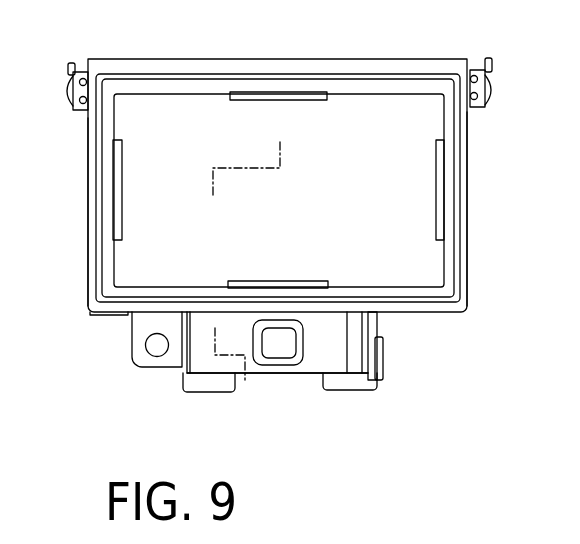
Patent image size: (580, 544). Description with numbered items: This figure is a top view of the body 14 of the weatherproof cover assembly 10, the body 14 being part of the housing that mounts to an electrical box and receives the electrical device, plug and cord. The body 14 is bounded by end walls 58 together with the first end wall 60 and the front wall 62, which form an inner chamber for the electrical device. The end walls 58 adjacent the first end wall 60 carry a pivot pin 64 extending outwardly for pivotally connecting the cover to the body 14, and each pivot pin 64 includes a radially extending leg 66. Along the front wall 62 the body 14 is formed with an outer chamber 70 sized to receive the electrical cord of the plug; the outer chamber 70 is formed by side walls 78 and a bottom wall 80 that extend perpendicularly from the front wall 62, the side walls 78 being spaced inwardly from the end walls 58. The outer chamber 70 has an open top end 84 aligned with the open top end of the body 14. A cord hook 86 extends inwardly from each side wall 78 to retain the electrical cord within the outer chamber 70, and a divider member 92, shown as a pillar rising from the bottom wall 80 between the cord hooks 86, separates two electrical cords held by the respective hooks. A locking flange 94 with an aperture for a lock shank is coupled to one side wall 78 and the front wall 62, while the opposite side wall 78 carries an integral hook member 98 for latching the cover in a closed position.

The weatherproof cover assembly 10 is at (279, 48).
The body 14 is at (410, 42).
The end walls 58 is at (88, 210).
The first end wall 60 is at (190, 62).
The front wall 62 is at (452, 315).
The pivot pin 64 is at (487, 100).
The radially extending leg 66 is at (488, 66).
The outer chamber 70 is at (306, 385).
The side walls 78 is at (182, 347).
The bottom wall 80 is at (328, 335).
The open top end 84 is at (230, 333).
The cord hook 86 is at (215, 400).
The divider member 92 is at (277, 350).
The locking flange 94 is at (143, 328).
The hook member 98 is at (382, 360).